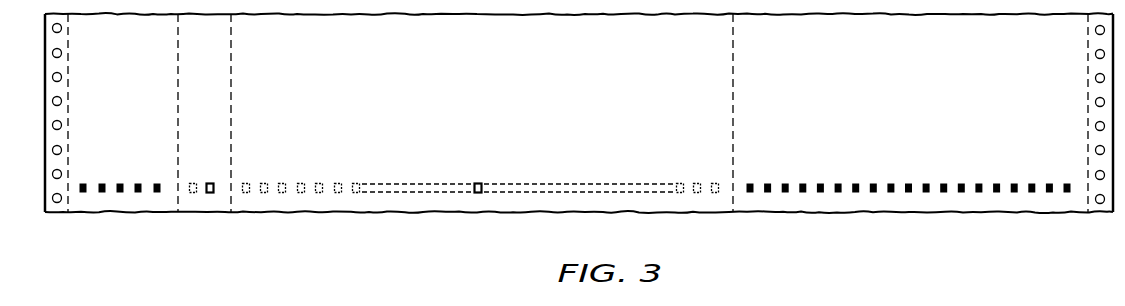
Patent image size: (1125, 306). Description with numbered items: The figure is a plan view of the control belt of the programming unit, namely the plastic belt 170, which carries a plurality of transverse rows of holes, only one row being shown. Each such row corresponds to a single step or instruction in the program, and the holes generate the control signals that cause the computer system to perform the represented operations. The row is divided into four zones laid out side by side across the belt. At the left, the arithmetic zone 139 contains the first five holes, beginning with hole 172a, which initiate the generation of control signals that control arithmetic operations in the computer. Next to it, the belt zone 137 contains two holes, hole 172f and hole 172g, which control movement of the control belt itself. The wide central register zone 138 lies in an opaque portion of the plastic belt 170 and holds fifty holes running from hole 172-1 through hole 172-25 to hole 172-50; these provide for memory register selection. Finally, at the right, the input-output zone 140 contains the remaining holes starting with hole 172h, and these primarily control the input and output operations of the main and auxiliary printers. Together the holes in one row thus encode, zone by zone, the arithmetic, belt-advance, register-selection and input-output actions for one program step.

The plastic belt 170 is at (695, 251).
The arithmetic zone 139 is at (83, 46).
The belt zone 137 is at (184, 46).
The register zone 138 is at (428, 46).
The input-output zone 140 is at (985, 47).
The hole 172a is at (163, 184).
The hole 172f is at (192, 183).
The hole 172g is at (219, 172).
The hole 172-1 is at (718, 184).
The hole 172-25 is at (485, 197).
The hole 172-50 is at (715, 193).
The hole 172h is at (1072, 184).